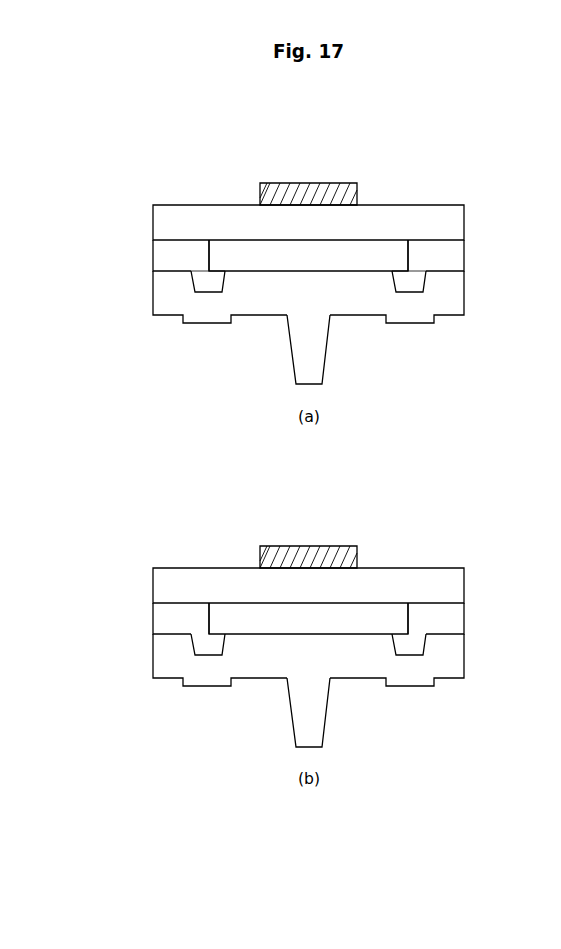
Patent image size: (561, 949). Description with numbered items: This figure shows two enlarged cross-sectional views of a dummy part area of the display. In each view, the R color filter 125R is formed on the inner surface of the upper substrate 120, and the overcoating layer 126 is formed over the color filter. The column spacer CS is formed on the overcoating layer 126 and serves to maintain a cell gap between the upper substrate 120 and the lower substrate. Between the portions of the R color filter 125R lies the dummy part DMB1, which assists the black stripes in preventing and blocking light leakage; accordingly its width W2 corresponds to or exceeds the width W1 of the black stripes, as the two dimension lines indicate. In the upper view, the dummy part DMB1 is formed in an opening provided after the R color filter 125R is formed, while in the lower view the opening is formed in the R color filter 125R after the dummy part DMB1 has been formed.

The upper substrate 120 is at (458, 222).
The 1B dummy part DMB1 is at (399, 254).
The R color filter 125R is at (158, 253).
The overcoating layer 126 is at (458, 293).
The column spacer CS is at (315, 358).
The width of the black stripes W1 is at (357, 183).
The width of the 1B dummy part W2 is at (408, 205).